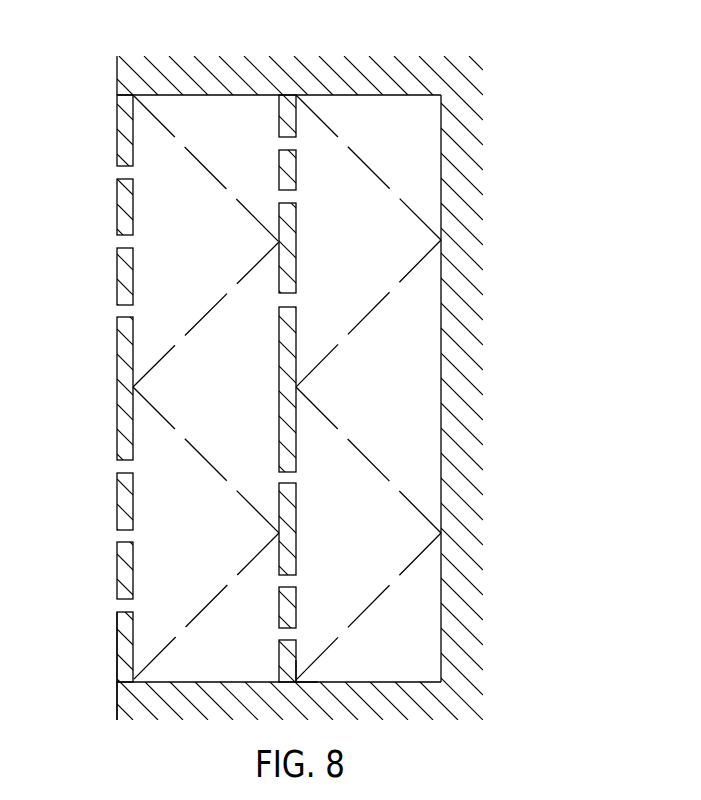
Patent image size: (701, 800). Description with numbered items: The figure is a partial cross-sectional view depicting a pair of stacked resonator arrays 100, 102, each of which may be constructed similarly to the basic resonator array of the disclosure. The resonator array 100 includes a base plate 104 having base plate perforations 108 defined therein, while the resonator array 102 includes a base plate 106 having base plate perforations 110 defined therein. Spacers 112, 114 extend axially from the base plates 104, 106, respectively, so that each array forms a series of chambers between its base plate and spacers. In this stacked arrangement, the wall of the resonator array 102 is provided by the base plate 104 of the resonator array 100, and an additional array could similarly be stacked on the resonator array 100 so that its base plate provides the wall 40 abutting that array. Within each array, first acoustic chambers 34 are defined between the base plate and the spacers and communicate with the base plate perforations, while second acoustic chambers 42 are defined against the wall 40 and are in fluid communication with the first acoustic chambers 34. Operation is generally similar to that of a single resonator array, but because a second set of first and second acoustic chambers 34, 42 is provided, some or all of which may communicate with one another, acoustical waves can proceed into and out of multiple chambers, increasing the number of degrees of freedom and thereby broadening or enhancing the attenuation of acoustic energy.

The resonator array 100 is at (388, 53).
The resonator array 102 is at (206, 53).
The base plate 104 is at (296, 680).
The base plate 106 is at (123, 676).
The base plate perforations 108 is at (272, 633).
The base plate perforations 110 is at (116, 532).
The spacer 112 is at (435, 602).
The spacer 114 is at (168, 673).
The wall 40 is at (441, 418).
The second acoustic chambers 42 is at (235, 412).
The first acoustic chambers 34 is at (183, 556).